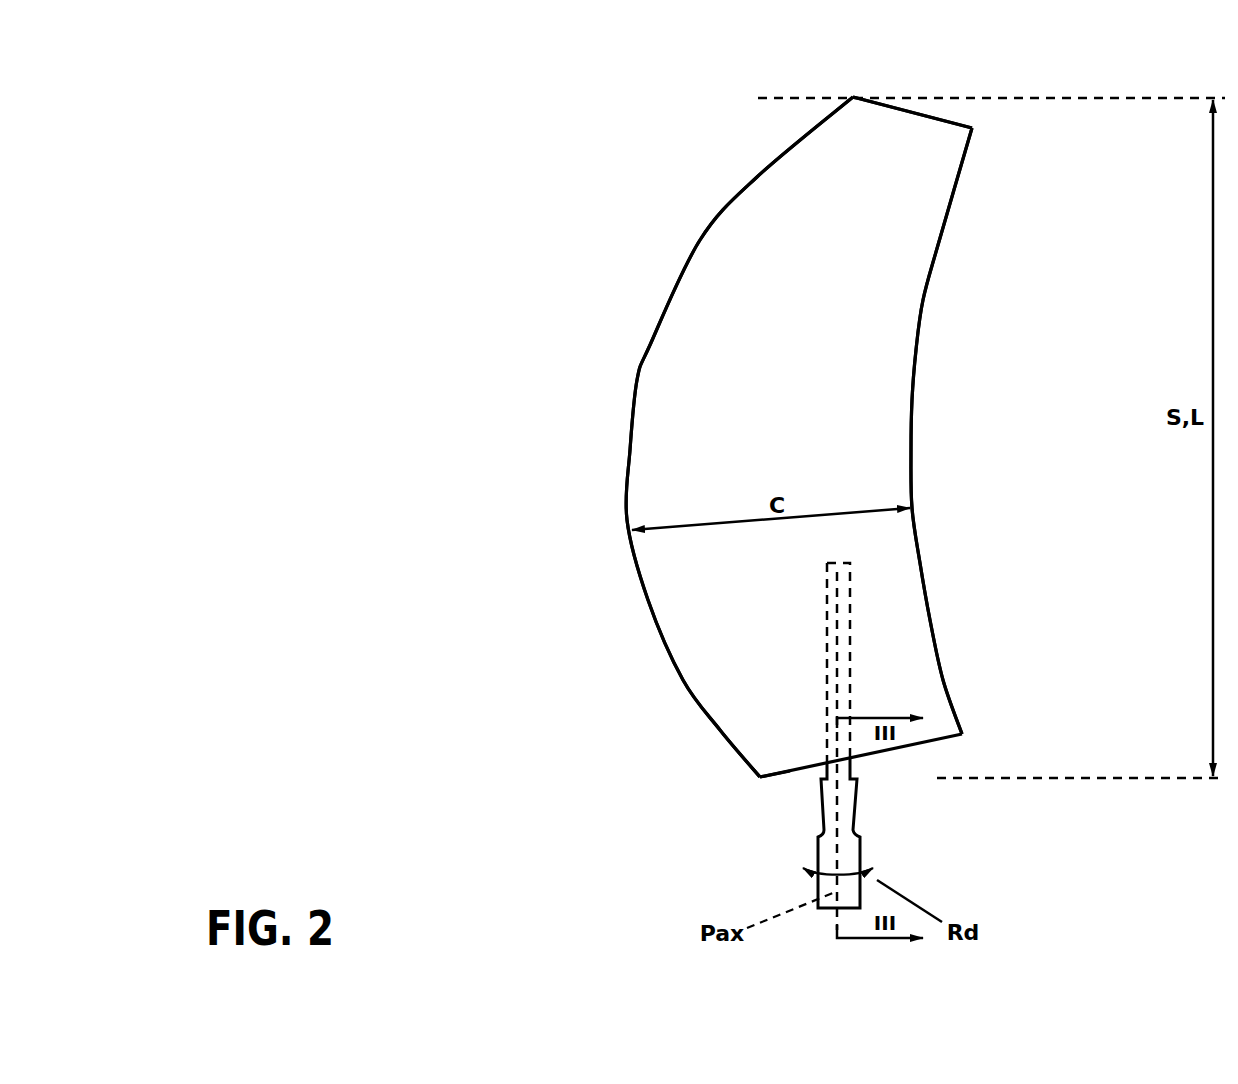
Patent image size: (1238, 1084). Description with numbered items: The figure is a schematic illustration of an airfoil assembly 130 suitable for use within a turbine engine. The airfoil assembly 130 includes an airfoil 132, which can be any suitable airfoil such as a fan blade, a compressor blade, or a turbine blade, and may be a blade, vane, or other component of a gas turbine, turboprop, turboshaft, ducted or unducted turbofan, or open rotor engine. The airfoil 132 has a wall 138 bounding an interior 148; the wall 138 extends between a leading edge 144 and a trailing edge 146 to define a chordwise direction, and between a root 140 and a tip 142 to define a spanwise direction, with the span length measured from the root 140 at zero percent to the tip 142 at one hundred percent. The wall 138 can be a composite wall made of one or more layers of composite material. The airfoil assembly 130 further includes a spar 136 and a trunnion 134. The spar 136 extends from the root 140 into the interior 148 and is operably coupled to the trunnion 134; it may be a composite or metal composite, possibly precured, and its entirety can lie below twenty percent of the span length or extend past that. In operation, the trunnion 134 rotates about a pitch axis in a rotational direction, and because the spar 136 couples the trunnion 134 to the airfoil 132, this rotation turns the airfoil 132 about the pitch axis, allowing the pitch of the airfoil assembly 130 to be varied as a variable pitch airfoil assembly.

The airfoil assembly 130 is at (340, 179).
The airfoil 132 is at (633, 380).
The trunnion 134 is at (867, 812).
The spar 136 is at (850, 667).
The wall 138 is at (803, 198).
The root 140 is at (777, 777).
The tip 142 is at (940, 117).
The leading edge 144 is at (700, 240).
The trailing edge 146 is at (935, 263).
The interior 148 is at (885, 592).